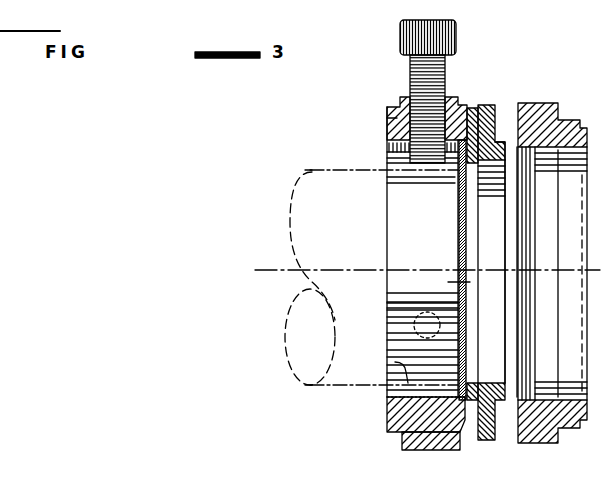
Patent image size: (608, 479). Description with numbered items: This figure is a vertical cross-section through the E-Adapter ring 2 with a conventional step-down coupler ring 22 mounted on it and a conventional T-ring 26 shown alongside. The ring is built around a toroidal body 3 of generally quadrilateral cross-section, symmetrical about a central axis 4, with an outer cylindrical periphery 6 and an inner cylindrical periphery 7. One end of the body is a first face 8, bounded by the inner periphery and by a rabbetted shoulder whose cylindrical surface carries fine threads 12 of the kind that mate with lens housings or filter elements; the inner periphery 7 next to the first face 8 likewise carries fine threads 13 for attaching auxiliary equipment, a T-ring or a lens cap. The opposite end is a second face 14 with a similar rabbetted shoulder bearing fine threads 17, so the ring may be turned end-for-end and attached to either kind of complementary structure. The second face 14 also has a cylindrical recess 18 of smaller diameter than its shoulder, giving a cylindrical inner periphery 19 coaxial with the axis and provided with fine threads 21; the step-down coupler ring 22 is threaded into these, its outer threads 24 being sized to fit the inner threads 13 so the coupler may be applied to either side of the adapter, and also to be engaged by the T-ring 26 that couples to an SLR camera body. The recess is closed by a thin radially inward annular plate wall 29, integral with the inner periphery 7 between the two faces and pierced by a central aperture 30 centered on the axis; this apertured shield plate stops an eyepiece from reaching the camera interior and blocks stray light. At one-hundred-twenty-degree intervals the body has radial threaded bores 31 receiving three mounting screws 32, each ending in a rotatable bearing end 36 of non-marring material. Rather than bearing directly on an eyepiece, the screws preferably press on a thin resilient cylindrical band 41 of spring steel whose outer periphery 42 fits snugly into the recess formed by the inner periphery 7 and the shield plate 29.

The E-Adapter ring 2 is at (372, 112).
The toroidal body 3 is at (400, 422).
The central axis 4 is at (288, 270).
The outer cylindrical periphery 6 is at (450, 96).
The inner cylindrical periphery 7 is at (440, 175).
The first face 8 is at (387, 407).
The fine threads 12 is at (392, 105).
The fine threads 13 is at (387, 144).
The second face 14 is at (500, 140).
The fine threads 17 is at (482, 105).
The cylindrical recess 18 is at (458, 358).
The cylindrical inner periphery 19 is at (495, 428).
The fine threads 21 is at (398, 434).
The step-down coupler ring 22 is at (493, 227).
The threads 24 is at (504, 142).
The T-ring 26 is at (584, 110).
The annular plate wall 29 is at (457, 200).
The central aperture 30 is at (446, 282).
The threaded bores 31 is at (390, 118).
The mounting screws 32 is at (448, 68).
The rotatable bearing end 36 is at (420, 181).
The cylindrical band 41 is at (395, 362).
The outer periphery 42 is at (384, 159).